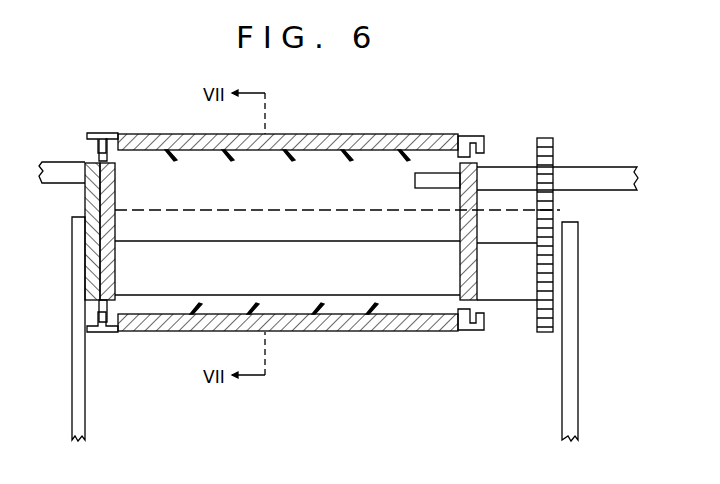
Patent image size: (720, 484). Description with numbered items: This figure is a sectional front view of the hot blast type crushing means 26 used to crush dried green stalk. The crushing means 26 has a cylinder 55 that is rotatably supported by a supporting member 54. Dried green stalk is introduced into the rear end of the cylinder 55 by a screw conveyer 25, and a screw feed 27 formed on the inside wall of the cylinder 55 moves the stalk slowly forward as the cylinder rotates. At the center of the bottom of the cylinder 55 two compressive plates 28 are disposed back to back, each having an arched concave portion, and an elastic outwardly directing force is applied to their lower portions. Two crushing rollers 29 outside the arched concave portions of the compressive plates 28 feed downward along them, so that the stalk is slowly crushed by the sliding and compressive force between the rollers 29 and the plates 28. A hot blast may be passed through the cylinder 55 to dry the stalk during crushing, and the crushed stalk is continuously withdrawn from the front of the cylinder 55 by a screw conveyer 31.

The screw conveyer 25 is at (63, 160).
The hot blast type crushing means 26 is at (404, 134).
The screw feed 27 is at (318, 308).
The compressive plates 28 is at (350, 210).
The crushing rollers 29 is at (393, 290).
The screw conveyer 31 is at (503, 165).
The supporting member 54 is at (72, 280).
The cylinder 55 is at (320, 135).